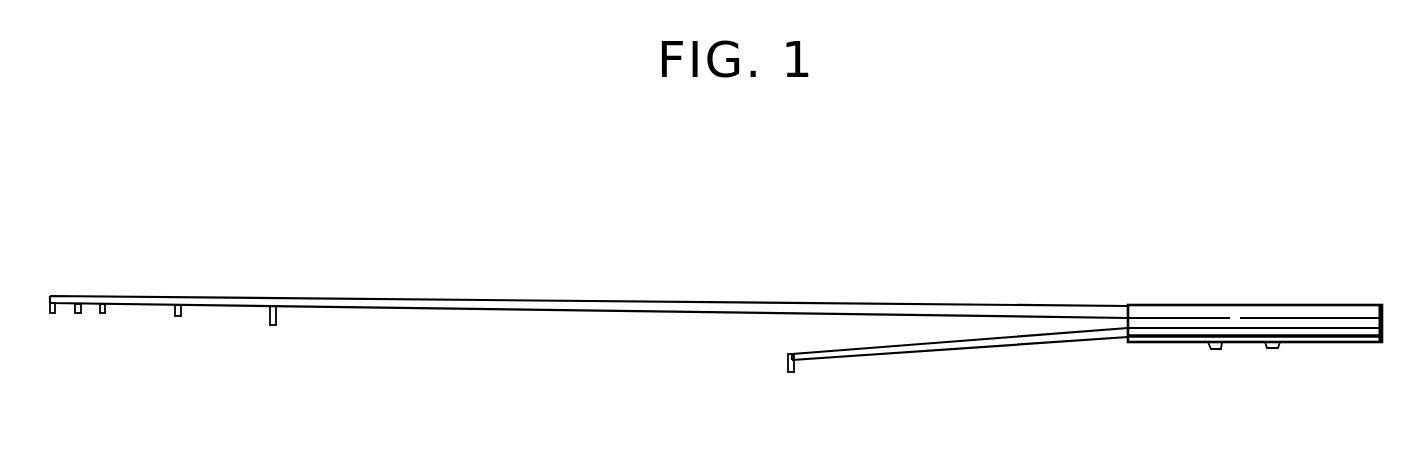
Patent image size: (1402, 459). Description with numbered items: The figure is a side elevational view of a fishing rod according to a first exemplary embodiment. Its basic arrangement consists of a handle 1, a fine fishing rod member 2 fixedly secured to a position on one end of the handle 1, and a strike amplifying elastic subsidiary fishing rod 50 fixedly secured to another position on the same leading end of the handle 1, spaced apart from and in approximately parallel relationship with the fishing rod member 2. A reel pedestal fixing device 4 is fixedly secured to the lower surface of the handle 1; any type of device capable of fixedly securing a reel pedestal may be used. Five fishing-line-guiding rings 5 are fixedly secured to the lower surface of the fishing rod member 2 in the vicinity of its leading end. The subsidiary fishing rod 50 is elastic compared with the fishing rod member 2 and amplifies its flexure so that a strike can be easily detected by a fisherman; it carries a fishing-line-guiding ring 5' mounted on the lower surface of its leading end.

The handle 1 is at (1227, 305).
The fishing rod member 2 is at (890, 304).
The reel pedestal fixing device 4 is at (1218, 350).
The fishing-line-guiding rings 5 is at (163, 341).
The strike amplifying elastic subsidiary fishing rod 50 is at (897, 353).
The fishing-line-guiding ring 5' is at (773, 393).